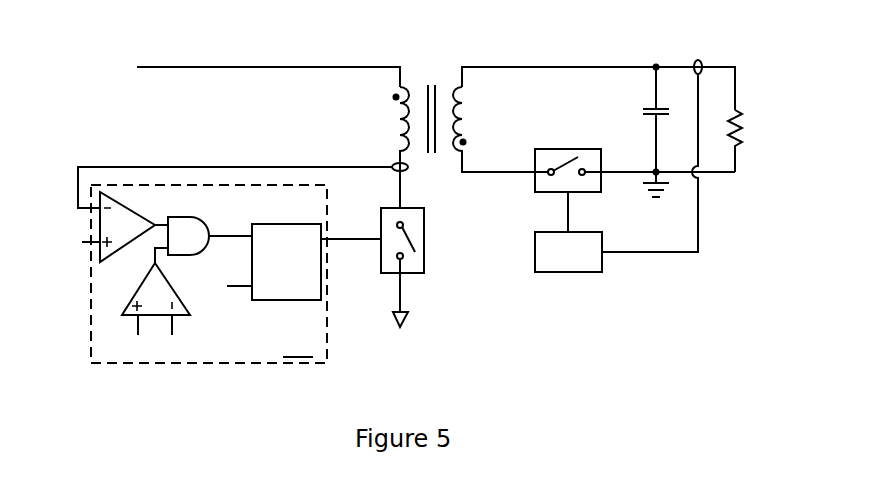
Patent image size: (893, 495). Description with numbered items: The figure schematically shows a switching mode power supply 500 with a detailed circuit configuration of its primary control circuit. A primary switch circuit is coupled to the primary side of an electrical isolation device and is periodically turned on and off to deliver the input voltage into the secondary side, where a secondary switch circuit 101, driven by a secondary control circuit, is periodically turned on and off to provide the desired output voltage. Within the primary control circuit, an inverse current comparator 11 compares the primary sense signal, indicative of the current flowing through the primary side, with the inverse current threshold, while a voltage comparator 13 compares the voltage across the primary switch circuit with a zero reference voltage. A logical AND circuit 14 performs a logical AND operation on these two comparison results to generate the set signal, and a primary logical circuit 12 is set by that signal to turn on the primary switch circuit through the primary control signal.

The switching mode power supply 500 is at (138, 41).
The inverse current comparator 11 is at (127, 227).
The primary logical circuit 12 is at (286, 263).
The voltage comparator 13 is at (156, 299).
The logical AND circuit 14 is at (188, 236).
The secondary switch circuit 101 is at (547, 173).